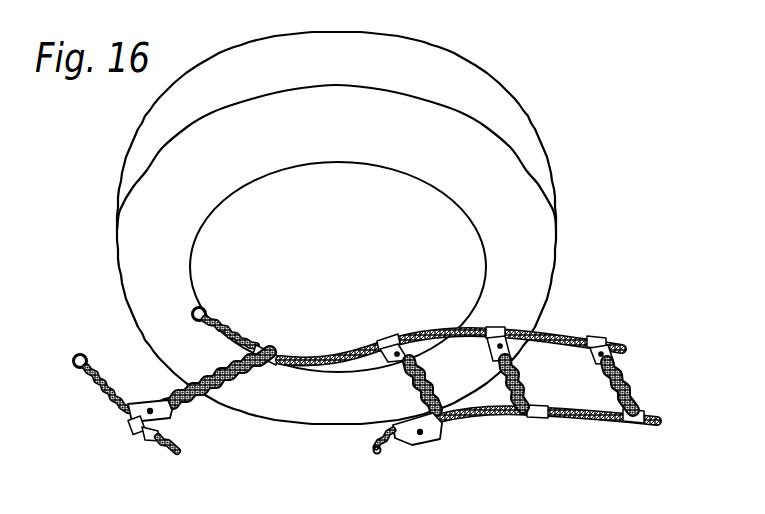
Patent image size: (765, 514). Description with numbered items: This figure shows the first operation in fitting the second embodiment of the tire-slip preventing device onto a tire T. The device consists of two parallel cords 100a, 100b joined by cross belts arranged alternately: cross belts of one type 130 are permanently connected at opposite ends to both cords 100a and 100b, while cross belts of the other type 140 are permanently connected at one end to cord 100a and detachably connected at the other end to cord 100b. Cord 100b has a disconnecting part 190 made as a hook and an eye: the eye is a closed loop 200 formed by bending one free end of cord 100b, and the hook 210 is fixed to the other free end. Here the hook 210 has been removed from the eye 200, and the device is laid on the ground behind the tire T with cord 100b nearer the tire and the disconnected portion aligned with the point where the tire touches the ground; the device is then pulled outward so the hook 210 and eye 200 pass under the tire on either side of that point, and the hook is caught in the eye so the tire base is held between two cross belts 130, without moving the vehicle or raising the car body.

The tire T is at (516, 107).
The parallel cord 100a is at (573, 337).
The parallel cord 100b is at (485, 414).
The cross belt 130 is at (203, 397).
The cross belt 140 is at (515, 377).
The disconnecting part 190 is at (285, 457).
The closed loop 200 is at (180, 451).
The hook 210 is at (370, 446).